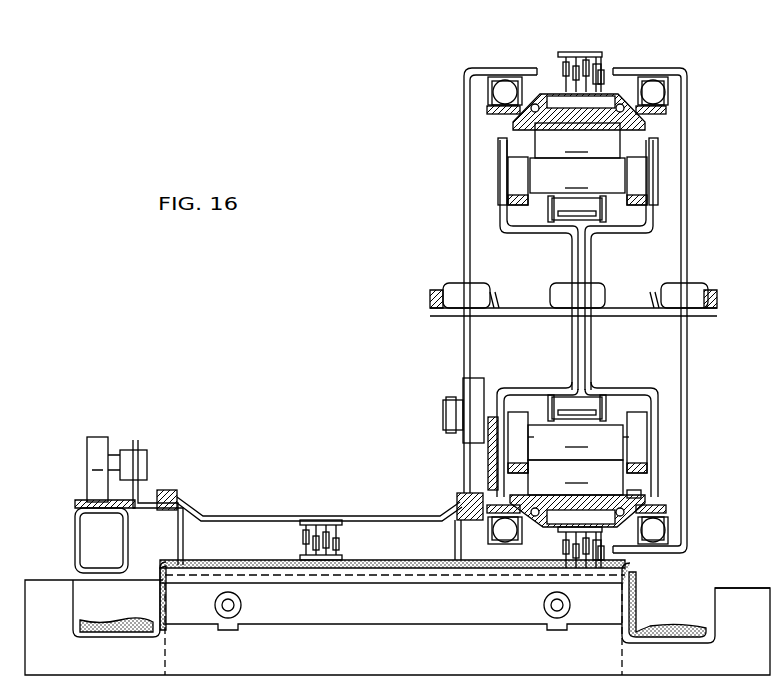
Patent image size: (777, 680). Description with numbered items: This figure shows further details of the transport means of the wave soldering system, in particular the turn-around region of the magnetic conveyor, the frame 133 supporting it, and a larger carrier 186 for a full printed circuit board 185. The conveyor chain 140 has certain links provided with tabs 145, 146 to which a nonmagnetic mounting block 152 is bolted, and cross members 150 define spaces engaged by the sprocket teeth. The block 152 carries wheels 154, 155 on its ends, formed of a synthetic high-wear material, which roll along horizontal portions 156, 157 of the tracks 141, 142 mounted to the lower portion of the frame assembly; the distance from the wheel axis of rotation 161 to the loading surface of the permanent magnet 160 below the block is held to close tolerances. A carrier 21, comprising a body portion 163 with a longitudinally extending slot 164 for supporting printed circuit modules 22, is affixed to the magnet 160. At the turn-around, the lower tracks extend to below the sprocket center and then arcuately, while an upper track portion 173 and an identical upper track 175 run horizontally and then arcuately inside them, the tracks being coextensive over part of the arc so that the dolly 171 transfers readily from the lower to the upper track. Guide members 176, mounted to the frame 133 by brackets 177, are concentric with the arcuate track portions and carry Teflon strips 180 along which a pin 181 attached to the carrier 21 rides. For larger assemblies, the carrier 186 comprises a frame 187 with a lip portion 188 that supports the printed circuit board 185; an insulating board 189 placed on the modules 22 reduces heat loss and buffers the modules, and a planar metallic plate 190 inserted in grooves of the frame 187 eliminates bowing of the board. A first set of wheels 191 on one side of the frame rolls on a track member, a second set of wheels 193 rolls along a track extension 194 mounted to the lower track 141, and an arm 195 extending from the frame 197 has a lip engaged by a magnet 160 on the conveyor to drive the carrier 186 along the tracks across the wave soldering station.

The carrier 21 is at (622, 92).
The printed circuit module 22 is at (342, 536).
The frame 133 is at (687, 245).
The conveyor chain 140 is at (592, 226).
The track 141 is at (492, 416).
The track 142 is at (660, 458).
The tab 145 is at (542, 420).
The tab 146 is at (650, 400).
The cross member 150 is at (560, 224).
The mounting block 152 is at (576, 309).
The wheel 154 is at (508, 180).
The wheel 155 is at (648, 180).
The horizontal track portion 156 is at (524, 440).
The horizontal track portion 157 is at (630, 440).
The permanent magnet 160 is at (575, 309).
The axis of rotation 161 is at (690, 432).
The body portion 163 is at (625, 550).
The longitudinally extending slot 164 is at (642, 494).
The dolly 171 is at (629, 146).
The upper track portion 173 is at (500, 218).
The upper track 175 is at (653, 200).
The guide member 176 is at (488, 88).
The bracket 177 is at (464, 140).
The Teflon strip 180 is at (500, 84).
The pin 181 is at (487, 110).
The printed circuit board 185 is at (243, 562).
The carrier 186 is at (172, 488).
The frame 187 is at (180, 548).
The lip portion 188 is at (207, 583).
The insulating board 189 is at (225, 522).
The metallic plate 190 is at (192, 500).
The first set of wheels 191 is at (88, 452).
The second set of wheels 193 is at (468, 390).
The track extension 194 is at (470, 455).
The arm 195 is at (457, 502).
The frame 197 is at (460, 482).